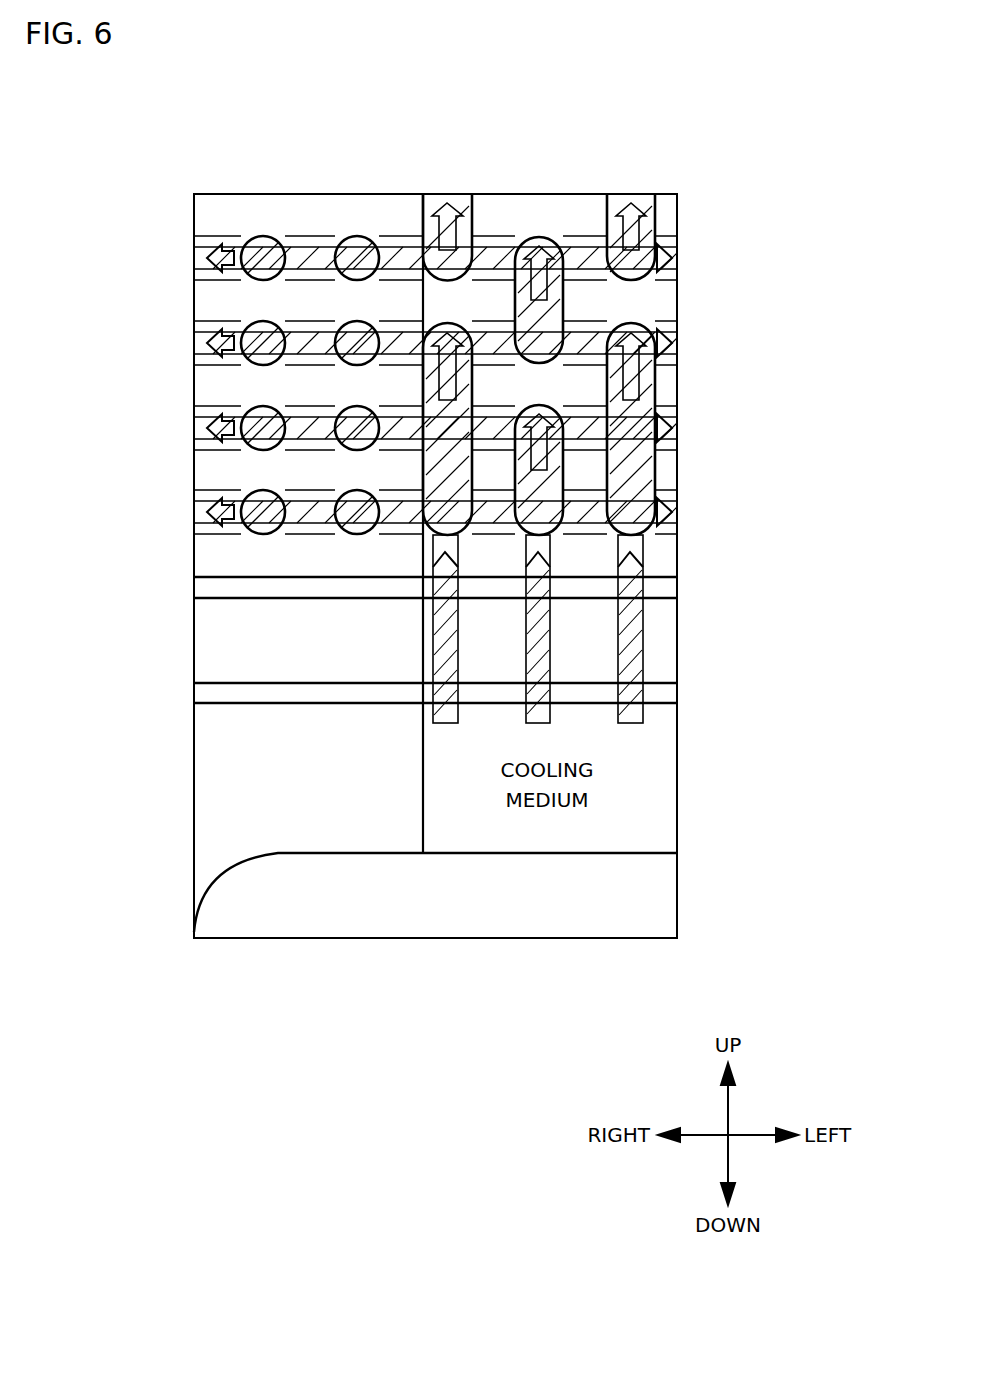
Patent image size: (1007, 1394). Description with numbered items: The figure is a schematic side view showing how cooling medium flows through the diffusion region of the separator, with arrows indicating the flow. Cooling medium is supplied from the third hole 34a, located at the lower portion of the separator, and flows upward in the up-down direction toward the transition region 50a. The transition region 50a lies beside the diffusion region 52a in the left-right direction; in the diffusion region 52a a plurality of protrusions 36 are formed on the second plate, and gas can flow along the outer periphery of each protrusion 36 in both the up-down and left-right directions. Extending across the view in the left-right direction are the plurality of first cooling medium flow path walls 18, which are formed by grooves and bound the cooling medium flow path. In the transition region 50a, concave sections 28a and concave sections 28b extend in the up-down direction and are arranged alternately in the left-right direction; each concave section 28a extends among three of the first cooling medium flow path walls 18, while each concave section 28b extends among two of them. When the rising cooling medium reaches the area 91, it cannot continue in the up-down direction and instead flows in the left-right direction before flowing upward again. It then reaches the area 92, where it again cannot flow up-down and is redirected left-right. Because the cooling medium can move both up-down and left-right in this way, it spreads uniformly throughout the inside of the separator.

The first cooling medium flow path walls 18 is at (205, 440).
The protrusions 36 is at (262, 337).
The diffusion region 52a is at (215, 152).
The transition region 50a is at (415, 152).
The area 92 is at (520, 245).
The concave sections 28b is at (600, 312).
The concave sections 28a is at (653, 417).
The area 91 is at (565, 325).
The third hole 34a is at (566, 900).